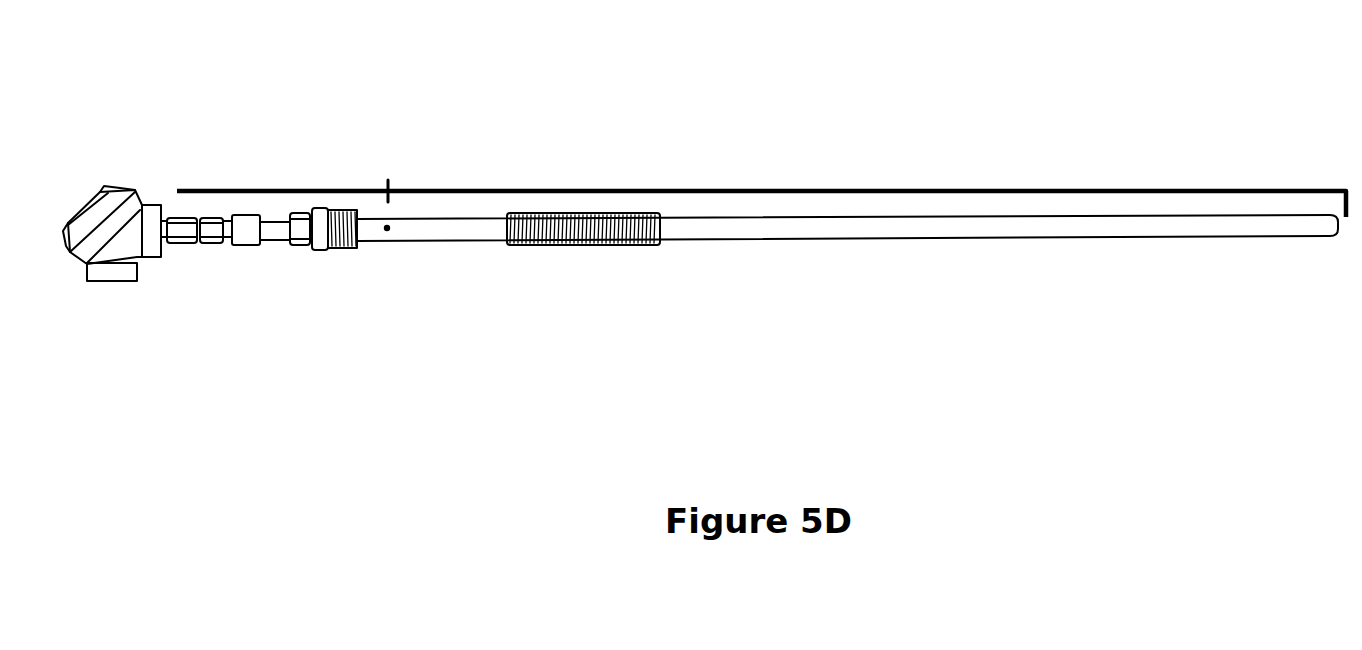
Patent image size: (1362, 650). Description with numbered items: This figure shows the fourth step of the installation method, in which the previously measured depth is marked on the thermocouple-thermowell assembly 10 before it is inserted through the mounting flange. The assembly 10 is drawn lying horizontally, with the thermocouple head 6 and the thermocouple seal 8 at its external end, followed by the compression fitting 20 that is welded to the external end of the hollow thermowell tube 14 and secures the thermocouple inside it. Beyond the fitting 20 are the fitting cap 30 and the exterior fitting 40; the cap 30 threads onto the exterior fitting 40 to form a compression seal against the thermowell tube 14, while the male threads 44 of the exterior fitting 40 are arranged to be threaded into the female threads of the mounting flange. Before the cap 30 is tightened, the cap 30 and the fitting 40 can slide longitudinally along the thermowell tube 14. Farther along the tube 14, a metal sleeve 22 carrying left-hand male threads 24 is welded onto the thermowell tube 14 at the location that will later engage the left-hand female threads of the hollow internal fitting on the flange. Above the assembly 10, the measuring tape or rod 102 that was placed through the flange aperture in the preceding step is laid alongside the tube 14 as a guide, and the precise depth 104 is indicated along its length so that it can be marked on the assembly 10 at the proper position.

The thermocouple head 6 is at (106, 190).
The thermocouple seal 8 is at (178, 245).
The thermocouple-thermowell assembly 10 is at (332, 357).
The thermowell tube 14 is at (1040, 236).
The compression fitting 20 is at (205, 247).
The metal sleeve 22 is at (661, 232).
The male threads 24 is at (635, 248).
The fitting cap 30 is at (283, 247).
The exterior fitting 40 is at (312, 250).
The male threads 44 is at (342, 252).
The measuring tape or rod 102 is at (210, 190).
The depth 104 is at (1347, 136).